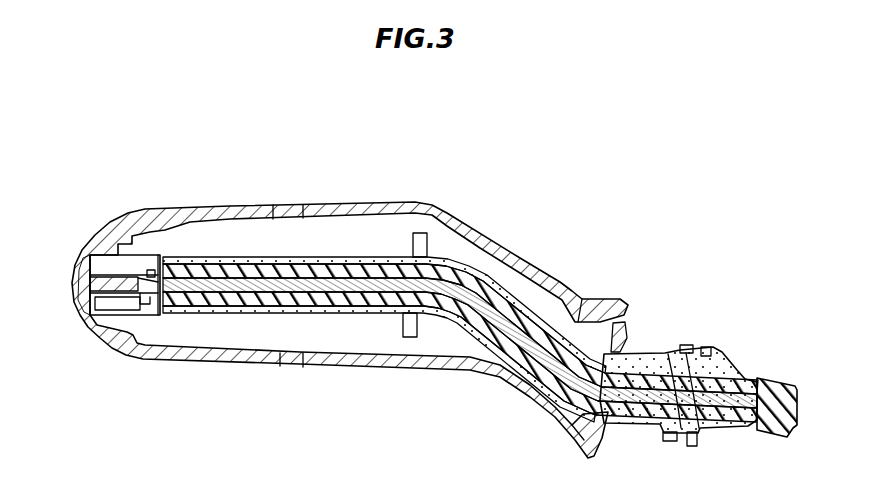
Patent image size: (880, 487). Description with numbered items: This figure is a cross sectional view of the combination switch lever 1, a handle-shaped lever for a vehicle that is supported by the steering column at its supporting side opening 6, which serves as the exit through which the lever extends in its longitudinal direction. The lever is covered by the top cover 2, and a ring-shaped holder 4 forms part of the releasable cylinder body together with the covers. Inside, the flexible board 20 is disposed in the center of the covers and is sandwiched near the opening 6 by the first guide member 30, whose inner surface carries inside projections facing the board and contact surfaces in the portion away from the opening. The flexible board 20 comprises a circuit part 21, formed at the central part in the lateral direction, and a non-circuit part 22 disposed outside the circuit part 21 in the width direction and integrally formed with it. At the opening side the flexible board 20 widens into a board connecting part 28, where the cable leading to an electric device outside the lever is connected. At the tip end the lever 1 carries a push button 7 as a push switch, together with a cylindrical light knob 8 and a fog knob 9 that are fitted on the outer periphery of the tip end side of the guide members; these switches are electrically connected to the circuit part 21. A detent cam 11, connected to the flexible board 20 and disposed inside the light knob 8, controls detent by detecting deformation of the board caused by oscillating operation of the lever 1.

The combination switch lever 1 is at (66, 133).
The top cover 2 is at (503, 247).
The holder 4 is at (246, 207).
The supporting side opening 6 is at (629, 330).
The push button 7 is at (74, 268).
The light knob 8 is at (190, 213).
The fog knob 9 is at (287, 207).
The detent cam 11 is at (151, 270).
The flexible board 20 is at (700, 349).
The circuit part 21 is at (672, 372).
The non-circuit part 22 is at (704, 352).
The board connecting part 28 is at (772, 380).
The first guide member 30 is at (652, 346).